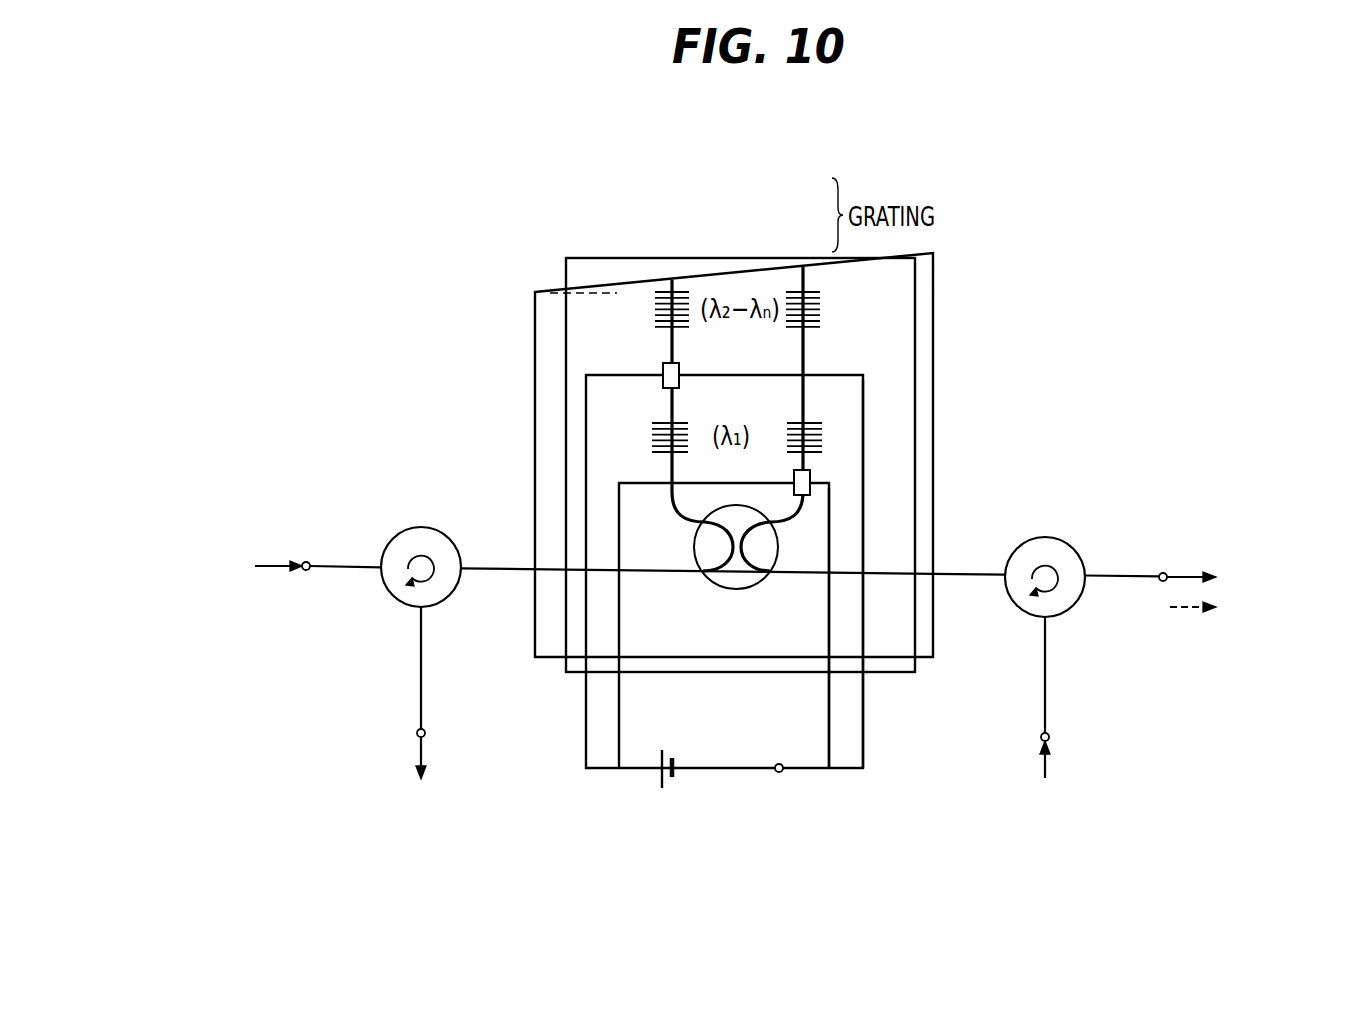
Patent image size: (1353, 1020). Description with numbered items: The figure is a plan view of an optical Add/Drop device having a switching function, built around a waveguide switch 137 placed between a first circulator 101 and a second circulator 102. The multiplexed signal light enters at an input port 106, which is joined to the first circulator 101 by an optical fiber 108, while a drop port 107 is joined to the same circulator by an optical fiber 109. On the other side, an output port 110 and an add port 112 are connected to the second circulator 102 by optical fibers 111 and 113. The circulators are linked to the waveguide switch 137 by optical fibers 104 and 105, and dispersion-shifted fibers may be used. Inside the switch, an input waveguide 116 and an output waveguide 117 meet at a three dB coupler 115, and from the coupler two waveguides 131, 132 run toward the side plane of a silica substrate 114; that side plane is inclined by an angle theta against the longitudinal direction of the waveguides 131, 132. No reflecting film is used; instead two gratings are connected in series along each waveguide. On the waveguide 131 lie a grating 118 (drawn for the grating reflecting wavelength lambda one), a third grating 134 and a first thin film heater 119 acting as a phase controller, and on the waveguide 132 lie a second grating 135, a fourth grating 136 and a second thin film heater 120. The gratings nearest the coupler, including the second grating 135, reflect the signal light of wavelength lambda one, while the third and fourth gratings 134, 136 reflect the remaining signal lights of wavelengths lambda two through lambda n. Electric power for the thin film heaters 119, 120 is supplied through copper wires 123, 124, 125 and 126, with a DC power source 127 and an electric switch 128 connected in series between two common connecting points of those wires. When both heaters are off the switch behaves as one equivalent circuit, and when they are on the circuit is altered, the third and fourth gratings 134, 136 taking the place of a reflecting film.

The first circulator 101 is at (382, 578).
The second circulator 102 is at (1045, 537).
The optical fiber 104 is at (487, 567).
The optical fiber 105 is at (957, 574).
The input port 106 is at (305, 562).
The drop port 107 is at (416, 734).
The optical fiber 108 is at (362, 566).
The optical fiber 109 is at (421, 668).
The output port 110 is at (1163, 573).
The optical fiber 111 is at (1102, 575).
The add port 112 is at (1049, 737).
The optical fiber 113 is at (1045, 683).
The SiO2 substrate 114 is at (933, 262).
The 3 dB coupler 115 is at (733, 592).
The input waveguide 116 is at (603, 572).
The output waveguide 117 is at (853, 574).
The grating 118 is at (656, 422).
The first thin film heater 119 is at (662, 370).
The second thin film heater 120 is at (810, 480).
The copper wire 123 is at (582, 697).
The copper wire 124 is at (865, 713).
The copper wire 125 is at (617, 718).
The copper wire 126 is at (830, 703).
The DC power source 127 is at (677, 772).
The electric switch 128 is at (775, 772).
The waveguide 131 is at (668, 492).
The waveguide 132 is at (805, 367).
The third grating 134 is at (684, 288).
The second grating 135 is at (822, 430).
The fourth grating 136 is at (793, 293).
The waveguide switch 137 is at (601, 257).